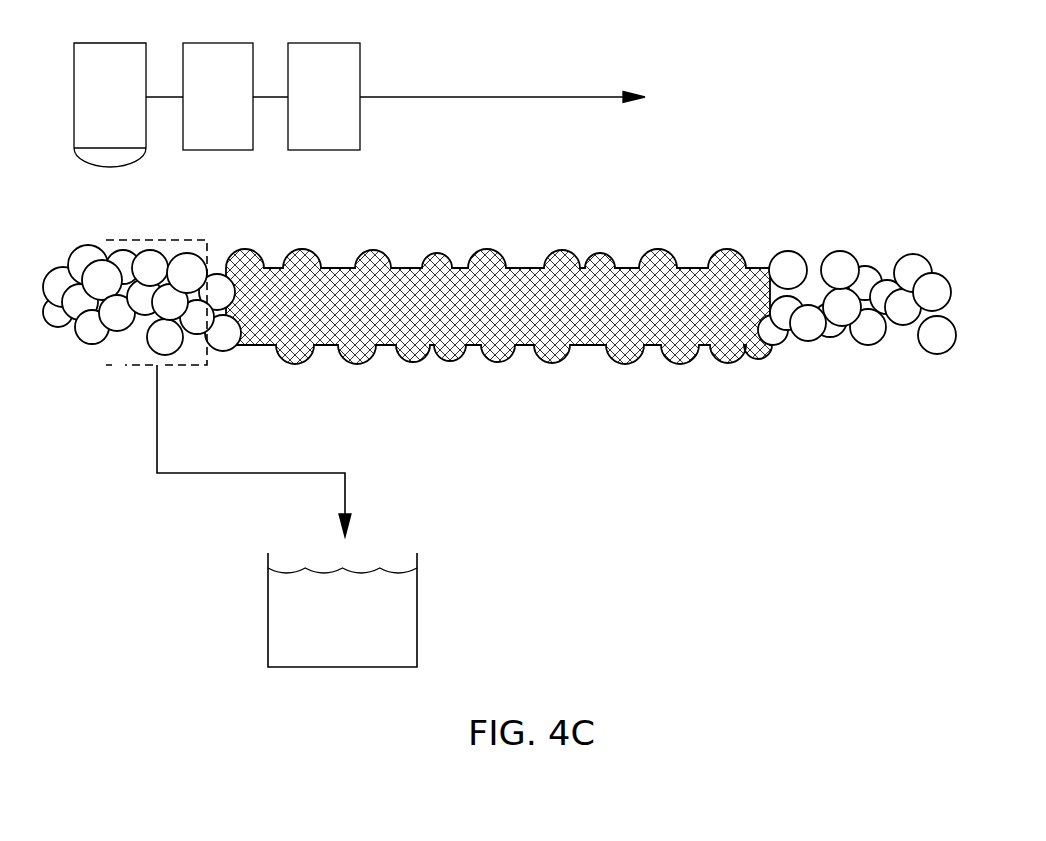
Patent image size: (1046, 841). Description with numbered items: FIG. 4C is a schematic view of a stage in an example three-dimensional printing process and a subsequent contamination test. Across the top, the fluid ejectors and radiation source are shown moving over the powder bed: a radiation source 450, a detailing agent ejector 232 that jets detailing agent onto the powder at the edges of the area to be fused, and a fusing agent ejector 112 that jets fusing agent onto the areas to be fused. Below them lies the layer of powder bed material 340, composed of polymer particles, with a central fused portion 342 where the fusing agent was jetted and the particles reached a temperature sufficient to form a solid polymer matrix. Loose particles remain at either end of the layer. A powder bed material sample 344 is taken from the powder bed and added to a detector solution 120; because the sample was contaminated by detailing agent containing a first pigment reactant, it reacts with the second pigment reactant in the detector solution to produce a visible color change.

The radiation source 450 is at (89, 108).
The detailing agent ejector 232 is at (197, 108).
The fusing agent ejector 112 is at (304, 108).
The fused portion 342 is at (528, 270).
The powder bed material 340 is at (790, 258).
The powder bed material sample 344 is at (122, 365).
The detector solution 120 is at (410, 605).